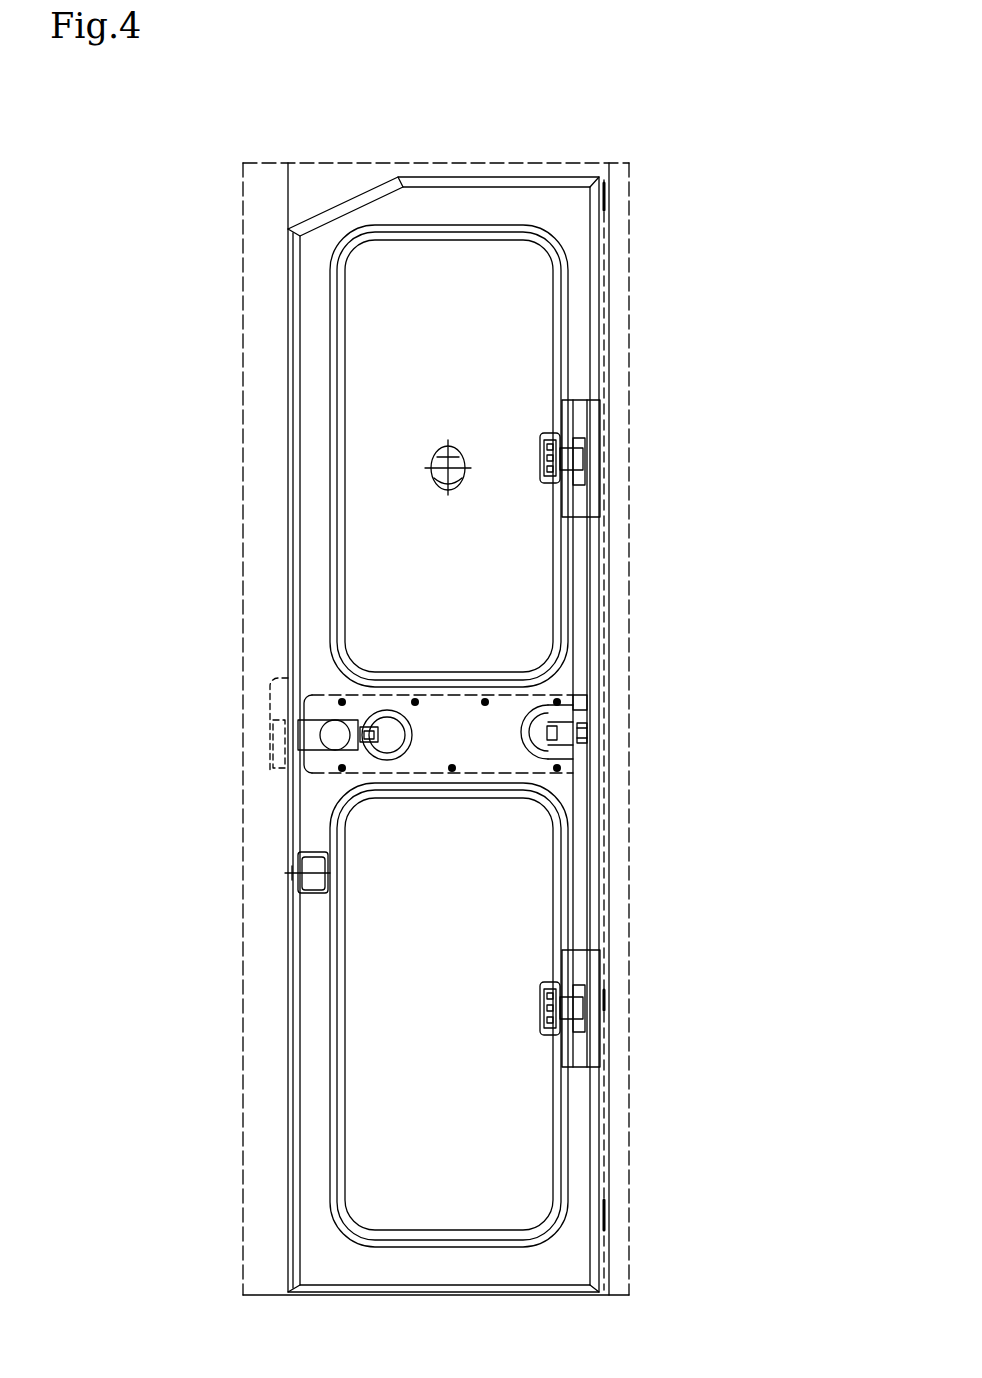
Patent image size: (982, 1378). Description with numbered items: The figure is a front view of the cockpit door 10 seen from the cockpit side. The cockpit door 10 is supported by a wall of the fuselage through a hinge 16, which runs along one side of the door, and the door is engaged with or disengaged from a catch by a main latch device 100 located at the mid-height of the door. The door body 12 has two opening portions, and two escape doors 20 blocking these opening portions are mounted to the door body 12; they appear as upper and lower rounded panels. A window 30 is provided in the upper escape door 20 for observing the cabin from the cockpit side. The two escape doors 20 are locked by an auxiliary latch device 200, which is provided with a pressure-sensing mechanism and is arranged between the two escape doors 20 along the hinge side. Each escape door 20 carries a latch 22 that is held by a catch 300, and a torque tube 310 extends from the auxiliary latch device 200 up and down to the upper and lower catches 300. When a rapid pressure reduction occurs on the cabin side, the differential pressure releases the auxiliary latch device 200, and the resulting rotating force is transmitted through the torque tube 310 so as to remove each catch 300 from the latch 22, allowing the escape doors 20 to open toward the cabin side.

The cockpit door 10 is at (560, 148).
The door body 12 is at (459, 210).
The hinge 16 is at (605, 492).
The escape door 20 is at (465, 609).
The latch 22 is at (578, 458).
The window 30 is at (443, 462).
The main latch device 100 is at (340, 748).
The auxiliary latch device 200 is at (557, 732).
The catch 300 is at (585, 440).
The torque tube 310 is at (580, 604).